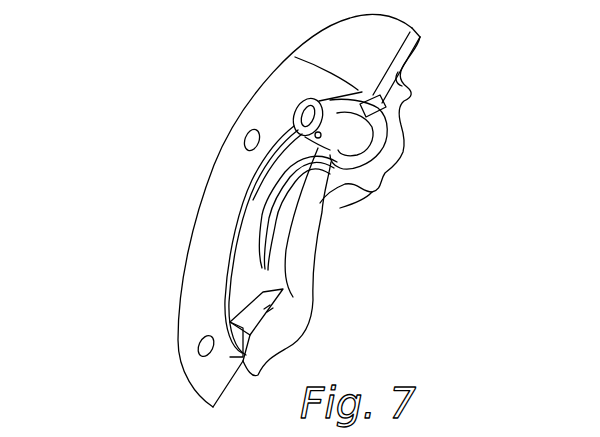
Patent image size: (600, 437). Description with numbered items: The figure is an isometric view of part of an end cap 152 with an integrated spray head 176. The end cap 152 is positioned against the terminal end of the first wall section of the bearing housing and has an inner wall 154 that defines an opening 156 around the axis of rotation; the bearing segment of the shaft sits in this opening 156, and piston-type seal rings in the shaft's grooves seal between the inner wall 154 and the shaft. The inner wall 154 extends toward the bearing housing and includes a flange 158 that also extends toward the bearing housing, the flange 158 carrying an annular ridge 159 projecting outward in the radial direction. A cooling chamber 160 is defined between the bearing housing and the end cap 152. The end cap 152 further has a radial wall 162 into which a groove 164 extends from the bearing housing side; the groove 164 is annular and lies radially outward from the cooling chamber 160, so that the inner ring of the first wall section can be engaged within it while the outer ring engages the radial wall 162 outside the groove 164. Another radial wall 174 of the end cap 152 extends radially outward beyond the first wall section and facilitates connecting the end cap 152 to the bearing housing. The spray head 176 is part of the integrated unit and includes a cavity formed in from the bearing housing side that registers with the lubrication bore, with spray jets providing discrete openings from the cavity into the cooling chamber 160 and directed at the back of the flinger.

The end cap 152 is at (371, 245).
The inner wall 154 is at (385, 173).
The opening 156 is at (328, 212).
The flange 158 is at (313, 288).
The annular ridge 159 is at (228, 320).
The cooling chamber 160 is at (313, 288).
The radial wall 162 is at (417, 98).
The groove 164 is at (352, 88).
The radial wall 174 is at (415, 52).
The spray head 176 is at (297, 122).